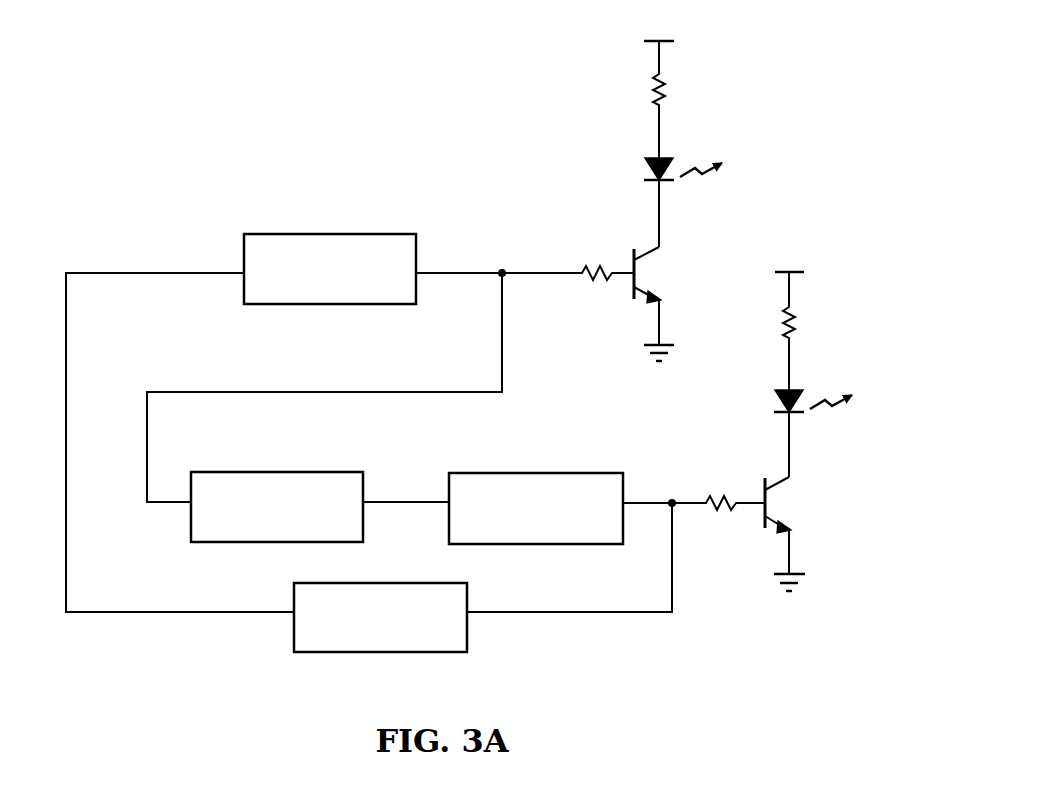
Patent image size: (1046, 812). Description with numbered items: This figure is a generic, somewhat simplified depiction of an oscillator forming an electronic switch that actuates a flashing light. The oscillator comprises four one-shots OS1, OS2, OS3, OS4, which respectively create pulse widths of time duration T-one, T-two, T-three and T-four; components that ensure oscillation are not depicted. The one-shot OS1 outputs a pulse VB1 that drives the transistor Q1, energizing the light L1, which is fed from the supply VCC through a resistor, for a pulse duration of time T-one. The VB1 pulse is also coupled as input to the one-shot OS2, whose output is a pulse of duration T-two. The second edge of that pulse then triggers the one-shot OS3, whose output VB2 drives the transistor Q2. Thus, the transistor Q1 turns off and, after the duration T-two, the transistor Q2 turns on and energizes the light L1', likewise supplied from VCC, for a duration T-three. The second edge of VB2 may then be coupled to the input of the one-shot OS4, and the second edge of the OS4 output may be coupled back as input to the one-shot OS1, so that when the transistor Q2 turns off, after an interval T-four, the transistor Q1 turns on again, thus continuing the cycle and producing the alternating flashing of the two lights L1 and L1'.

The supply voltage VCC is at (725, 138).
The light L1 is at (683, 144).
The light L1' is at (813, 374).
The transistor Q1 is at (598, 304).
The transistor Q2 is at (749, 534).
The VB1 pulse VB1 is at (485, 262).
The VB2 output VB2 is at (640, 495).
The one-shot OS1 is at (241, 423).
The one-shot OS2 is at (320, 507).
The one-shot OS3 is at (536, 508).
The one-shot OS4 is at (380, 617).